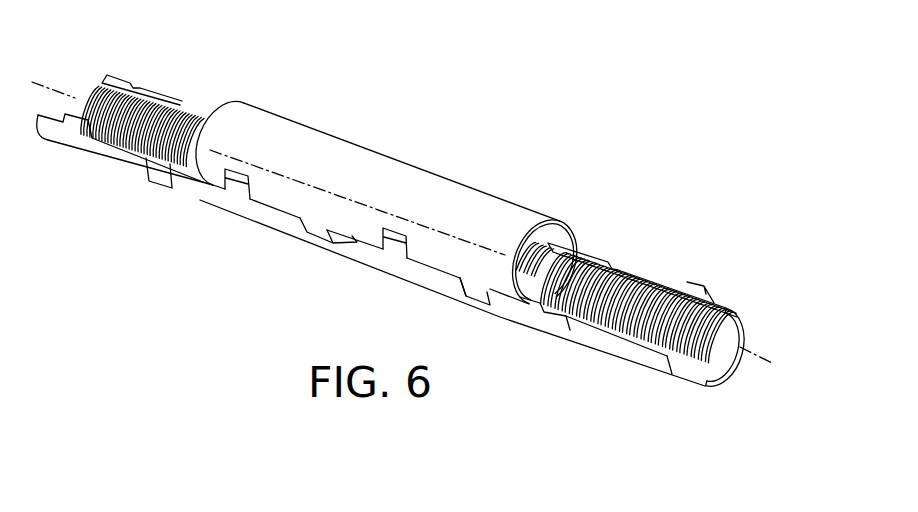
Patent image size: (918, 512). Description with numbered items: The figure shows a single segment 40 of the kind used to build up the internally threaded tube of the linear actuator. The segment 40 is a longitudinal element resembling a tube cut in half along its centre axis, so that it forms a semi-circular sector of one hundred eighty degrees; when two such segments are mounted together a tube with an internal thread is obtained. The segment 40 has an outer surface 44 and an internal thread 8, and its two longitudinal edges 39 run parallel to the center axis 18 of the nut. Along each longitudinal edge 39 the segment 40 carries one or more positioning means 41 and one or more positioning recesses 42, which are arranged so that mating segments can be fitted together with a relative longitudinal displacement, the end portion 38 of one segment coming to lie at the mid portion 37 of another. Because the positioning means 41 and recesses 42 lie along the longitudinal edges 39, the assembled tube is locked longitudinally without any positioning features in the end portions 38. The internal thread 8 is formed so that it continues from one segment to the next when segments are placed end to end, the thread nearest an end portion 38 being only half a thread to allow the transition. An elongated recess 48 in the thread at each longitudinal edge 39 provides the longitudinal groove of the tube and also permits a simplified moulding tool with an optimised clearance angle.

The center axis 18 is at (43, 85).
The segment 40 is at (458, 190).
The mid portion 37 is at (598, 228).
The positioning recess 42 is at (621, 266).
The positioning means 41 is at (704, 283).
The elongated recess 48 is at (727, 312).
The end portion 38 is at (708, 393).
The internal thread 8 is at (580, 372).
The longitudinal edge 39 is at (582, 333).
The outer surface 44 is at (466, 310).